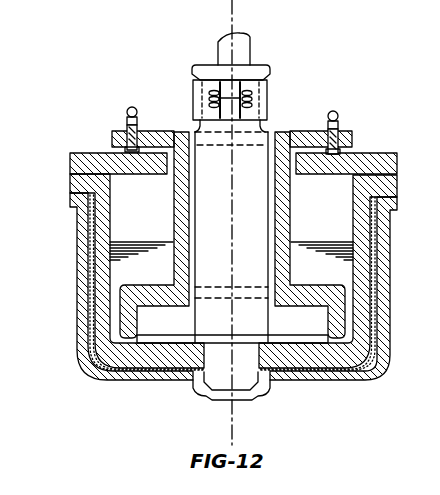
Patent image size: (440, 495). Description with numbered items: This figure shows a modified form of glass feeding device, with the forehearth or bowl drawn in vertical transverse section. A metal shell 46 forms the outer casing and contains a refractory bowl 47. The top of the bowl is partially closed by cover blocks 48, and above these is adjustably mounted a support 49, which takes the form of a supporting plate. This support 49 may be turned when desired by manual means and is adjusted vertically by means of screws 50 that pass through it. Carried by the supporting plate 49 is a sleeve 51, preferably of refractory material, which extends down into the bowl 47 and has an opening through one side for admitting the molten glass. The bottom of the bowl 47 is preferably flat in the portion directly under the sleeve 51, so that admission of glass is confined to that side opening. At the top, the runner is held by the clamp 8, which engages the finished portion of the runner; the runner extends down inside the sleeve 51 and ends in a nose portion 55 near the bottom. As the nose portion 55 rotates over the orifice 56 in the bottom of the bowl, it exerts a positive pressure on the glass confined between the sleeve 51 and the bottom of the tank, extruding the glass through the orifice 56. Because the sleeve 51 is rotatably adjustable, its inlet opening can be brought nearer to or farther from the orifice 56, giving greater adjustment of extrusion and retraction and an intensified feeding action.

The clamp 8 is at (250, 48).
The metal shell 46 is at (86, 372).
The refractory bowl 47 is at (91, 302).
The cover blocks 48 is at (72, 162).
The support 49 is at (112, 141).
The screws 50 is at (138, 99).
The sleeve 51 is at (175, 227).
The nose portion 55 is at (165, 337).
The orifice 56 is at (212, 391).